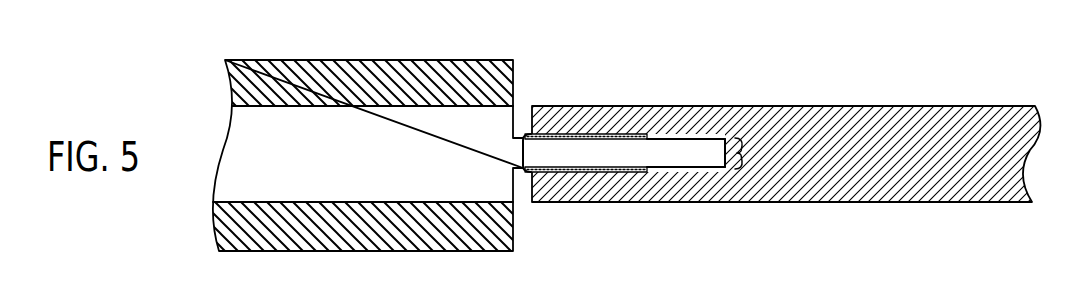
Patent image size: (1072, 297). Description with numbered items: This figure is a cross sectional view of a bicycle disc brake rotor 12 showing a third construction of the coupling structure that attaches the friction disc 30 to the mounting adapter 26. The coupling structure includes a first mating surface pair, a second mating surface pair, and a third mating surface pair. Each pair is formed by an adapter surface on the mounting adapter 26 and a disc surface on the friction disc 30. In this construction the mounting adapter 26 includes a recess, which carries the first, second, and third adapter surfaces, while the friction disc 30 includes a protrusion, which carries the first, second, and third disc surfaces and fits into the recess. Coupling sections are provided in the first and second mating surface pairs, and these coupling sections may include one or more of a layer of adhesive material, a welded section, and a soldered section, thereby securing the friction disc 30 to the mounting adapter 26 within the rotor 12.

The bicycle disc brake rotor 12 is at (790, 102).
The mounting adapter 26 is at (889, 166).
The friction disc 30 is at (220, 254).